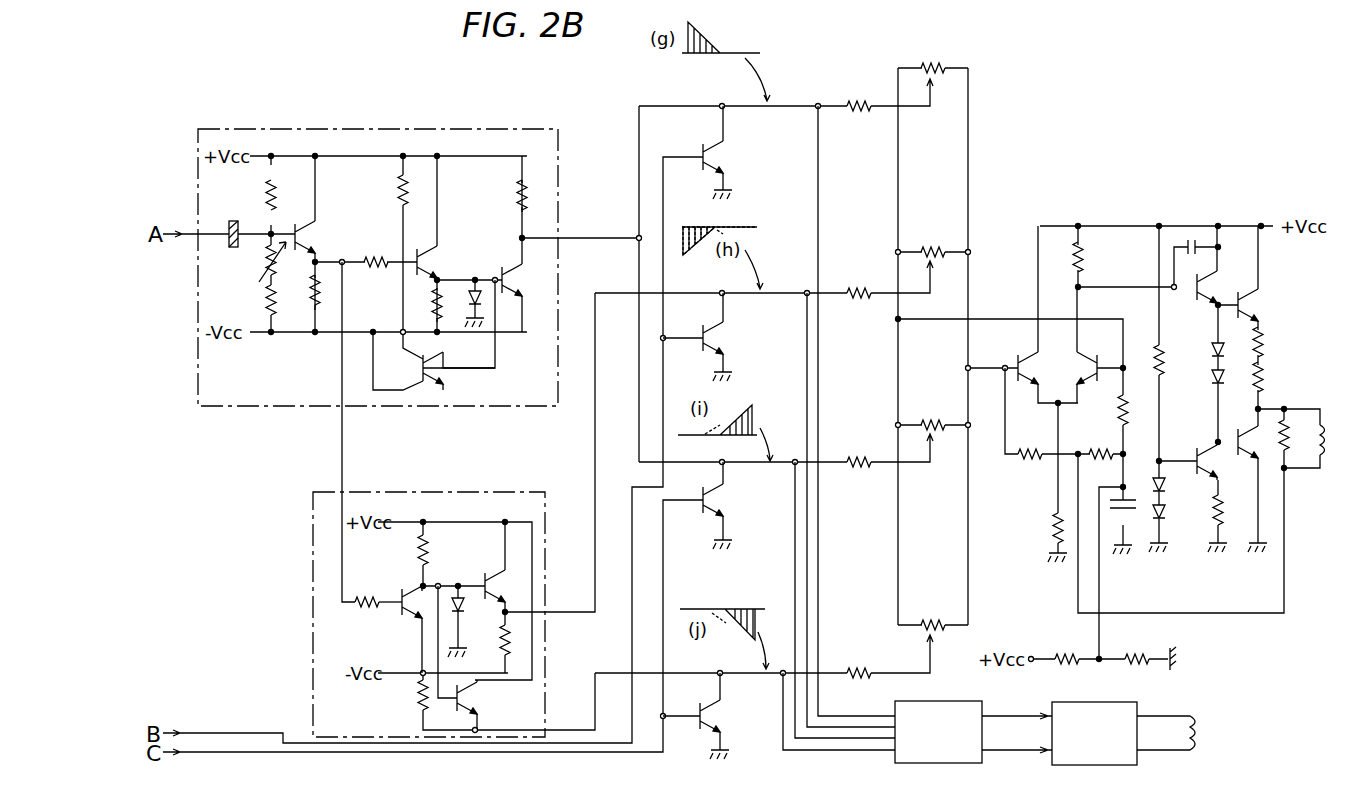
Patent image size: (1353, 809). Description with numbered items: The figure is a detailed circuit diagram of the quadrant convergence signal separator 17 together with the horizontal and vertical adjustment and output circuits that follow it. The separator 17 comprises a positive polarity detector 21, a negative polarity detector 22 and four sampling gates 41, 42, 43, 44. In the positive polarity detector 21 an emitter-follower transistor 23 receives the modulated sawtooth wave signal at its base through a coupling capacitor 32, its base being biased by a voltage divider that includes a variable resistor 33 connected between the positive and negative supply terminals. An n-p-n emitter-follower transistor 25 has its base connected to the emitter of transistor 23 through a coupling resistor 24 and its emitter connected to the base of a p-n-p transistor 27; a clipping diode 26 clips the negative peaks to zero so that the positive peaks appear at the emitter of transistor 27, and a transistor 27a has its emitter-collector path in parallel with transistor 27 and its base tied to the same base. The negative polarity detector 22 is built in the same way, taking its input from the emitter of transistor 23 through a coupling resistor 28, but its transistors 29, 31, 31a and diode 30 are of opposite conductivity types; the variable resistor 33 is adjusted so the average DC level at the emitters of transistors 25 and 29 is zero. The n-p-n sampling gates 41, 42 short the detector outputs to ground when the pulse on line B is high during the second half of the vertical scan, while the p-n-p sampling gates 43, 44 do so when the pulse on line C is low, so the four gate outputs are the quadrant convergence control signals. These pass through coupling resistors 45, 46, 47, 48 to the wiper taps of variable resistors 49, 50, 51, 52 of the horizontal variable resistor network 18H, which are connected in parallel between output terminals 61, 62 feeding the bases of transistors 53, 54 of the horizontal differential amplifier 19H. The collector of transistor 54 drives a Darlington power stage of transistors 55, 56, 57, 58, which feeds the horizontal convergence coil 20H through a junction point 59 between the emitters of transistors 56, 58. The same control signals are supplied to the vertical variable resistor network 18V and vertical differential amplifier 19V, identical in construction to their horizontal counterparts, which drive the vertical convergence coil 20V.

The quadrant convergence signal separator 17 is at (398, 83).
The positive polarity detector 21 is at (296, 129).
The negative polarity detector 22 is at (313, 634).
The emitter-follower transistor 23 is at (311, 237).
The coupling resistor 24 is at (376, 258).
The n-p-n transistor 25 is at (434, 268).
The clipping diode 26 is at (479, 281).
The p-n-p transistor 27 is at (513, 283).
The transistor 27a is at (436, 384).
The coupling resistor 28 is at (383, 597).
The transistor 29 is at (398, 618).
The diode 30 is at (460, 620).
The transistor 31 is at (482, 580).
The transistor 31a is at (477, 712).
The coupling capacitor 32 is at (233, 223).
The variable resistor 33 is at (259, 264).
The sampling gate 41 is at (714, 159).
The sampling gate 42 is at (714, 340).
The sampling gate 43 is at (714, 502).
The sampling gate 44 is at (711, 718).
The coupling resistor 45 is at (853, 104).
The coupling resistor 46 is at (856, 291).
The coupling resistor 47 is at (856, 460).
The coupling resistor 48 is at (856, 671).
The variable resistor 49 is at (937, 66).
The variable resistor 50 is at (948, 252).
The variable resistor 51 is at (946, 425).
The variable resistor 52 is at (945, 624).
The transistor 53 is at (1014, 368).
The transistor 54 is at (1097, 369).
The transistor 55 is at (1195, 289).
The transistor 56 is at (1250, 312).
The transistor 57 is at (1194, 457).
The transistor 58 is at (1235, 449).
The junction point 59 is at (1262, 409).
The output terminal 61 is at (987, 368).
The output terminal 62 is at (1000, 319).
The horizontal variable resistor network 18H is at (932, 37).
The horizontal differential amplifier 19H is at (1183, 201).
The horizontal convergence coil 20H is at (1326, 465).
The vertical variable resistor network 18V is at (961, 746).
The vertical differential amplifier 19V is at (1117, 747).
The vertical convergence coil 20V is at (1213, 735).